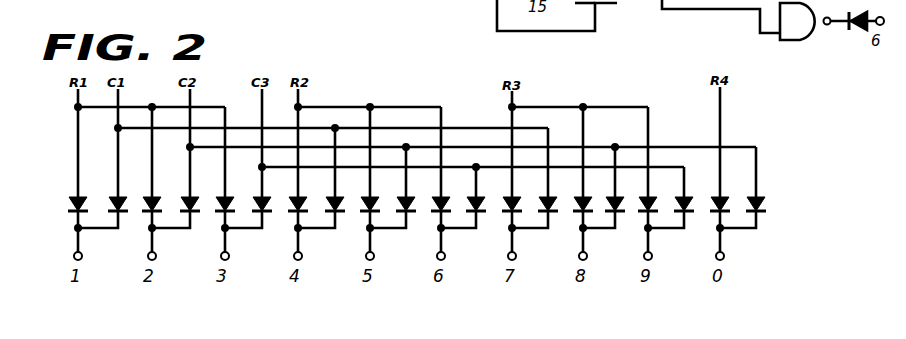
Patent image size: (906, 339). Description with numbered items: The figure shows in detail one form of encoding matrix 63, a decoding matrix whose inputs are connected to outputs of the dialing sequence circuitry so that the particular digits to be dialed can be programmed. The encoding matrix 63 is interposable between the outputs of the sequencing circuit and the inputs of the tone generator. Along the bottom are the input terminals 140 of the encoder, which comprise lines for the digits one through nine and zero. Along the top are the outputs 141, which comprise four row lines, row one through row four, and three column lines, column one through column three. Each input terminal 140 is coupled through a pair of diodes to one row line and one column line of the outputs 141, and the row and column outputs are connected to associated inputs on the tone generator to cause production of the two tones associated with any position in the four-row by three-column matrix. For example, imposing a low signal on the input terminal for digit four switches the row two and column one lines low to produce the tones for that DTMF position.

The outputs of the encoding matrix 141 is at (730, 113).
The encoding matrix 63 is at (758, 181).
The input terminals of the encoder 140 is at (742, 246).